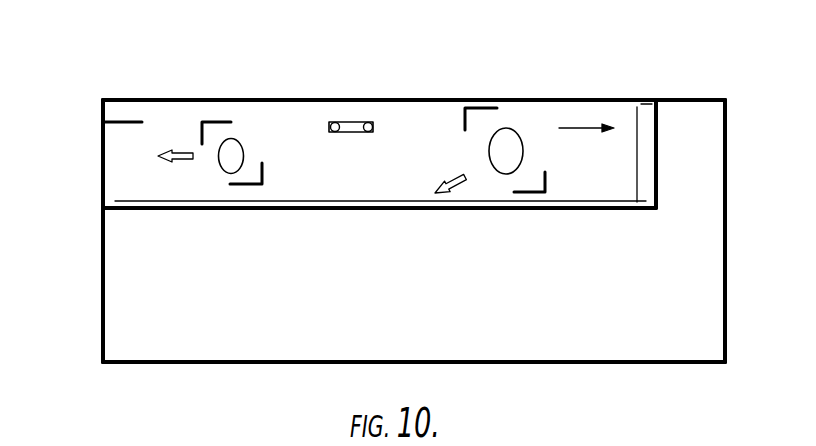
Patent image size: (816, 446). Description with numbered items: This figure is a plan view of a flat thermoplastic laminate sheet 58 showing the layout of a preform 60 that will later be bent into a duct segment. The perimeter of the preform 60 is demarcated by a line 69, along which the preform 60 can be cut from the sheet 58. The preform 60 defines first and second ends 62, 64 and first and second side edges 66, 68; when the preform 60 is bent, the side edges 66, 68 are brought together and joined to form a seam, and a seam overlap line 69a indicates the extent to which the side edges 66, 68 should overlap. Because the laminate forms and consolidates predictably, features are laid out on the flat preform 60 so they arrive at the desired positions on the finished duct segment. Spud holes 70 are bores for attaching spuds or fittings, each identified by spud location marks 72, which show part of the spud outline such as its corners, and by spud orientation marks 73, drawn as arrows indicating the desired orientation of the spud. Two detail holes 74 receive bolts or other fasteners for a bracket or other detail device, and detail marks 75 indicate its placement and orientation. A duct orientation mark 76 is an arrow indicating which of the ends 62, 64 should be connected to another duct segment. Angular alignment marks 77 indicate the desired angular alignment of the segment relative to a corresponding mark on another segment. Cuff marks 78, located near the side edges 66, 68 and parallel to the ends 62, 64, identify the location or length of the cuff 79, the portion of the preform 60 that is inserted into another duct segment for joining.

The flat sheet 58 is at (130, 266).
The preform 60 is at (122, 163).
The first end 62 is at (103, 143).
The second end 64 is at (663, 138).
The first side edge 66 is at (312, 100).
The second side edge 68 is at (197, 208).
The line 69 is at (157, 208).
The seam overlap line 69a is at (378, 202).
The spud holes 70 is at (243, 145).
The spud location marks 72 is at (218, 122).
The spud orientation marks 73 is at (180, 148).
The detail holes 74 is at (370, 122).
The detail marks 75 is at (352, 122).
The duct orientation marks 76 is at (587, 128).
The angular alignment marks 77 is at (123, 120).
The cuff marks 78 is at (634, 122).
The cuff 79 is at (645, 122).